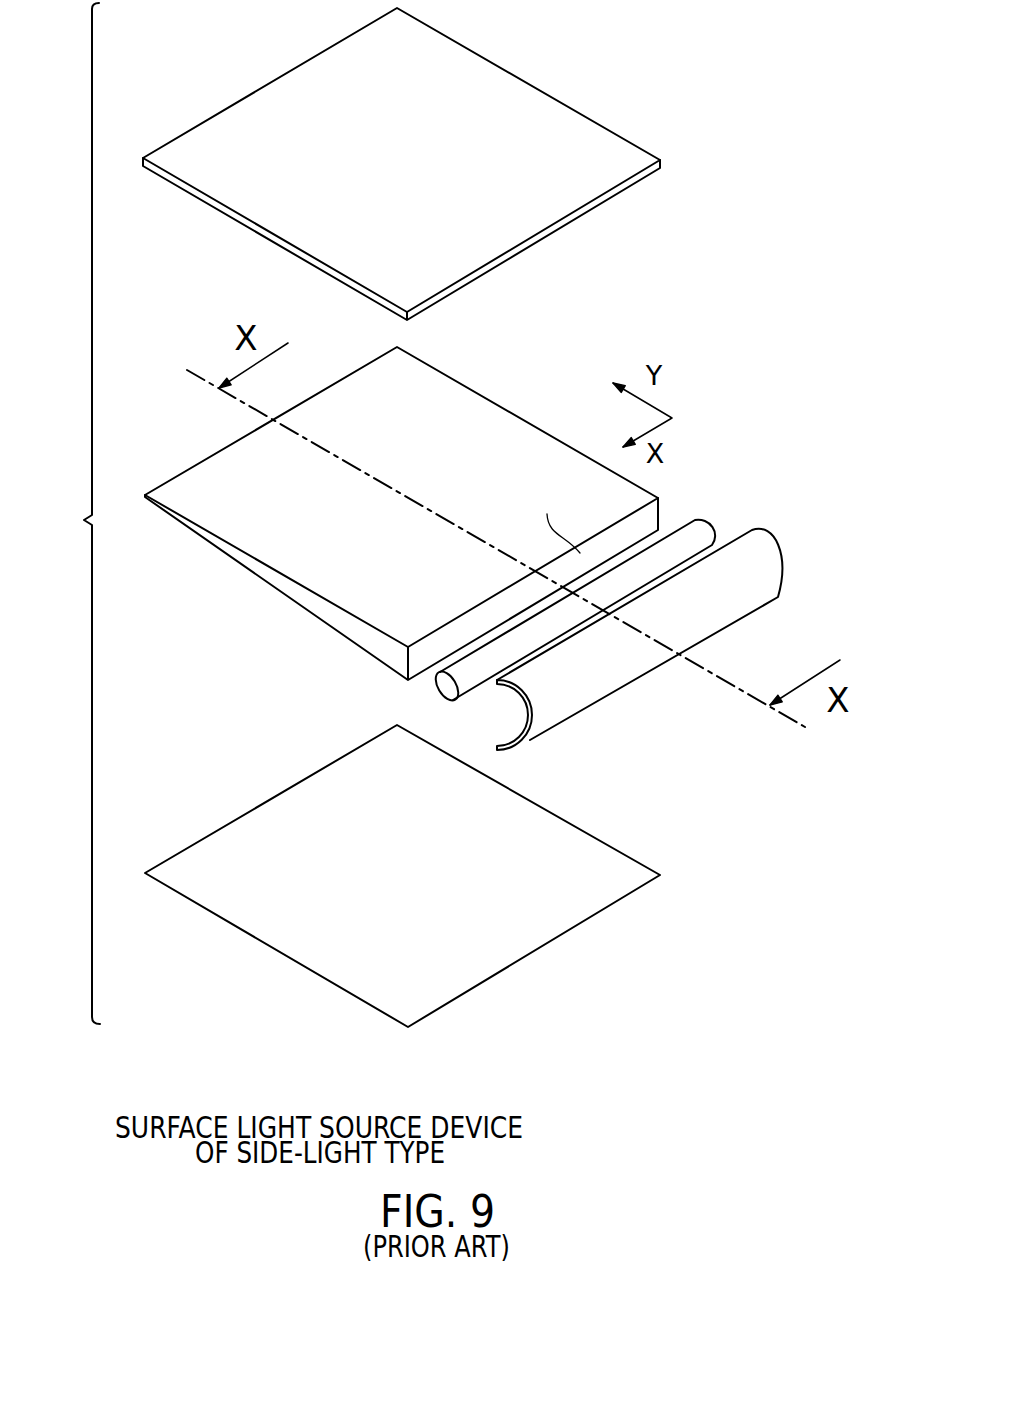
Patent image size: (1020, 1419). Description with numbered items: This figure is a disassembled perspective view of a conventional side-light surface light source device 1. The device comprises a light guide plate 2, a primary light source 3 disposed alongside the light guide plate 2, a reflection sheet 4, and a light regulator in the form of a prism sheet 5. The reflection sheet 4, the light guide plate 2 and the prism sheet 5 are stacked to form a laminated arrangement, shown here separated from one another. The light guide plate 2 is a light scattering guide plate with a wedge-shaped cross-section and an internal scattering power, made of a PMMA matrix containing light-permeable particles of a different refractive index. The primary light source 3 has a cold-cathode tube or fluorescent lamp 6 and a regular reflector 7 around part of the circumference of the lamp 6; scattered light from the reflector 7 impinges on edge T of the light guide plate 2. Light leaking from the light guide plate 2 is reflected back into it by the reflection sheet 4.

The side-light surface light source device 1 is at (367, 1025).
The light guide plate 2 is at (177, 502).
The primary light source 3 is at (724, 467).
The reflection sheet 4 is at (453, 985).
The prism sheet 5 is at (540, 215).
The fluorescent lamp 6 is at (468, 678).
The reflector 7 is at (595, 682).